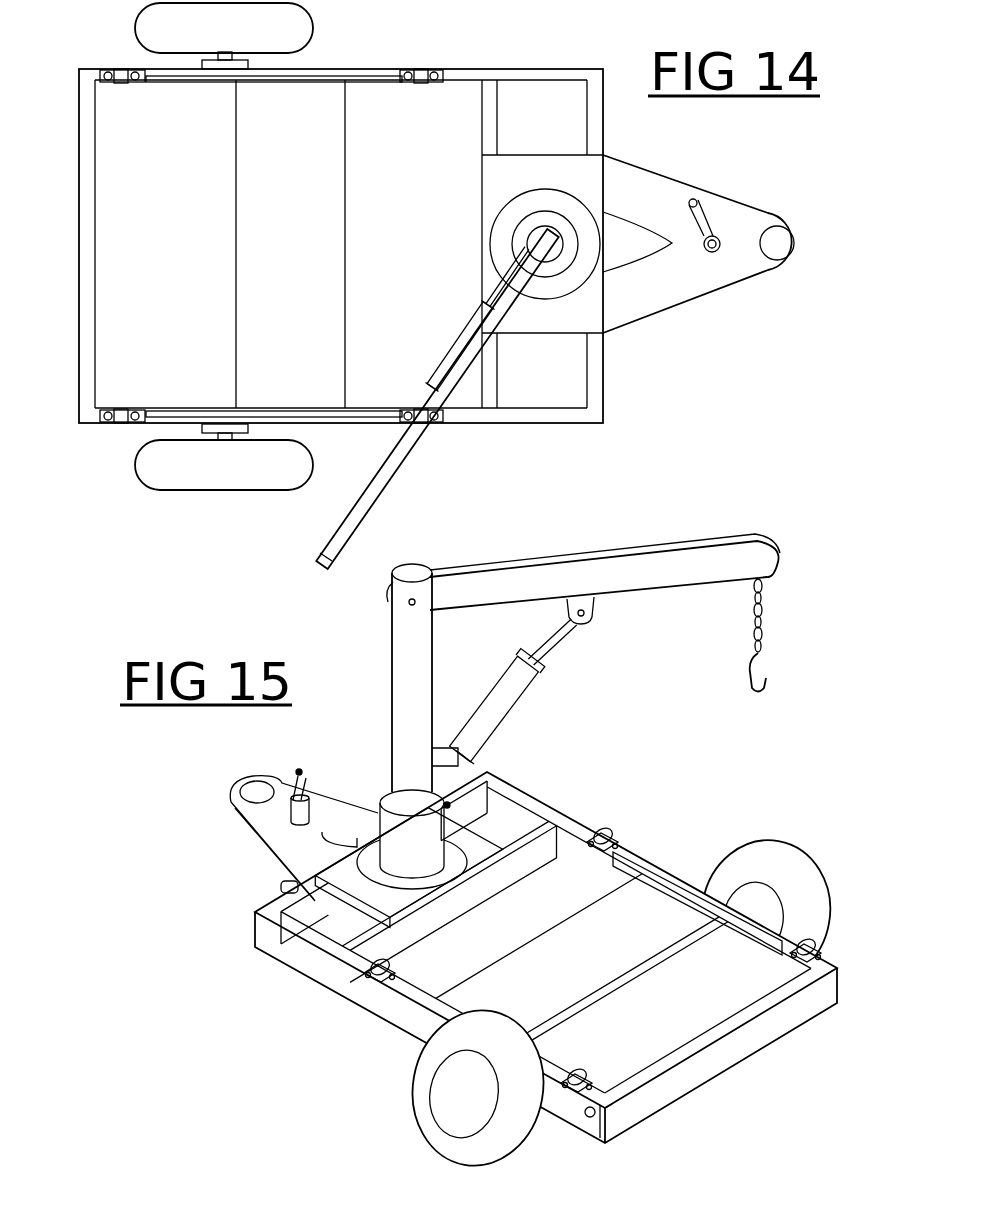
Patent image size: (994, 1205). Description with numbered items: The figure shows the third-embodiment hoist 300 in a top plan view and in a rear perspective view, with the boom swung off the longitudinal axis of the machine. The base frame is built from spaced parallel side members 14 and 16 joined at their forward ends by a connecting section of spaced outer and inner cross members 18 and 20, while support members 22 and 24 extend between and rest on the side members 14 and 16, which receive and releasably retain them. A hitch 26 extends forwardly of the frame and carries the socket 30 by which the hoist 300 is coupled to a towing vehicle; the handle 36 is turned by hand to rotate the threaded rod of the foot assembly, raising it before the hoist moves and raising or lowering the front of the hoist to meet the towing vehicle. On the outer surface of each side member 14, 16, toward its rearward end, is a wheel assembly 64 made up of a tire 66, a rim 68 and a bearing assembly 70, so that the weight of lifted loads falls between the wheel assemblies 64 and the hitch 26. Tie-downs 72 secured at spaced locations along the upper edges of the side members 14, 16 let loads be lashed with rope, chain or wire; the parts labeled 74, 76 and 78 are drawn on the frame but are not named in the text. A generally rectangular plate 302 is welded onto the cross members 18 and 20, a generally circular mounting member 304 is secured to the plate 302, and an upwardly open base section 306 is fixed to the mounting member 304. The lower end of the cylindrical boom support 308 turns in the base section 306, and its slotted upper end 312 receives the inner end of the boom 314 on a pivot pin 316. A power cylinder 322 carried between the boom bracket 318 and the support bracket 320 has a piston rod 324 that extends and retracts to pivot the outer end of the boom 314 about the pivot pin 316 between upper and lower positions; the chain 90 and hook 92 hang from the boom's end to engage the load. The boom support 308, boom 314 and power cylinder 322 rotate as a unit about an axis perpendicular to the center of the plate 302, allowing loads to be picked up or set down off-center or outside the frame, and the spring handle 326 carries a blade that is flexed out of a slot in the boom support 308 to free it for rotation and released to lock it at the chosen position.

In FIG. 14, the side member 14 is at (540, 410).
In FIG. 15, the side member 14 is at (565, 823).
In FIG. 14, the side member 16 is at (490, 72).
In FIG. 15, the side member 16 is at (383, 1017).
In FIG. 14, the outer cross member 18 is at (604, 128).
In FIG. 15, the outer cross member 18 is at (270, 910).
In FIG. 14, the inner cross member 20 is at (485, 130).
In FIG. 15, the inner cross member 20 is at (357, 933).
In FIG. 14, the support member 22 is at (298, 278).
In FIG. 15, the support member 22 is at (567, 995).
In FIG. 14, the support member 24 is at (96, 292).
In FIG. 15, the support member 24 is at (682, 1067).
In FIG. 14, the hitch 26 is at (745, 283).
In FIG. 15, the hitch 26 is at (252, 838).
In FIG. 14, the socket 30 is at (778, 232).
In FIG. 15, the socket 30 is at (245, 798).
In FIG. 14, the handle 36 is at (703, 212).
In FIG. 15, the handle 36 is at (295, 783).
In FIG. 14, the wheel assembly 64 is at (174, 271).
In FIG. 15, the wheel assembly 64 is at (596, 995).
In FIG. 14, the tire 66 is at (276, 478).
In FIG. 15, the tire 66 is at (798, 878).
In FIG. 15, the rim 68 is at (727, 895).
In FIG. 14, the bearing assembly 70 is at (245, 69).
In FIG. 14, the tie-downs 72 is at (146, 85).
In FIG. 15, the tie-downs 72 is at (398, 970).
In FIG. 14, the axle 74 is at (176, 82).
In FIG. 15, the axle 74 is at (765, 946).
In FIG. 15, the frame corner joint 76 is at (607, 1098).
In FIG. 15, the mounting hole 78 is at (585, 1117).
In FIG. 15, the chain 90 is at (764, 606).
In FIG. 15, the hook 92 is at (768, 683).
In FIG. 14, the hoist 300 is at (356, 46).
In FIG. 15, the hoist 300 is at (218, 914).
In FIG. 14, the plate 302 is at (568, 328).
In FIG. 15, the plate 302 is at (485, 858).
In FIG. 14, the mounting member 304 is at (548, 192).
In FIG. 15, the mounting member 304 is at (437, 878).
In FIG. 15, the base section 306 is at (383, 840).
In FIG. 14, the boom support 308 is at (527, 243).
In FIG. 15, the boom support 308 is at (487, 667).
In FIG. 14, the slotted upper end 312 is at (592, 262).
In FIG. 14, the boom 314 is at (365, 500).
In FIG. 15, the boom 314 is at (550, 555).
In FIG. 15, the pivot pin 316 is at (408, 604).
In FIG. 15, the boom bracket 318 is at (592, 610).
In FIG. 15, the support bracket 320 is at (464, 766).
In FIG. 14, the power cylinder 322 is at (452, 350).
In FIG. 15, the power cylinder 322 is at (510, 700).
In FIG. 15, the piston rod 324 is at (553, 642).
In FIG. 15, the spring handle 326 is at (455, 806).